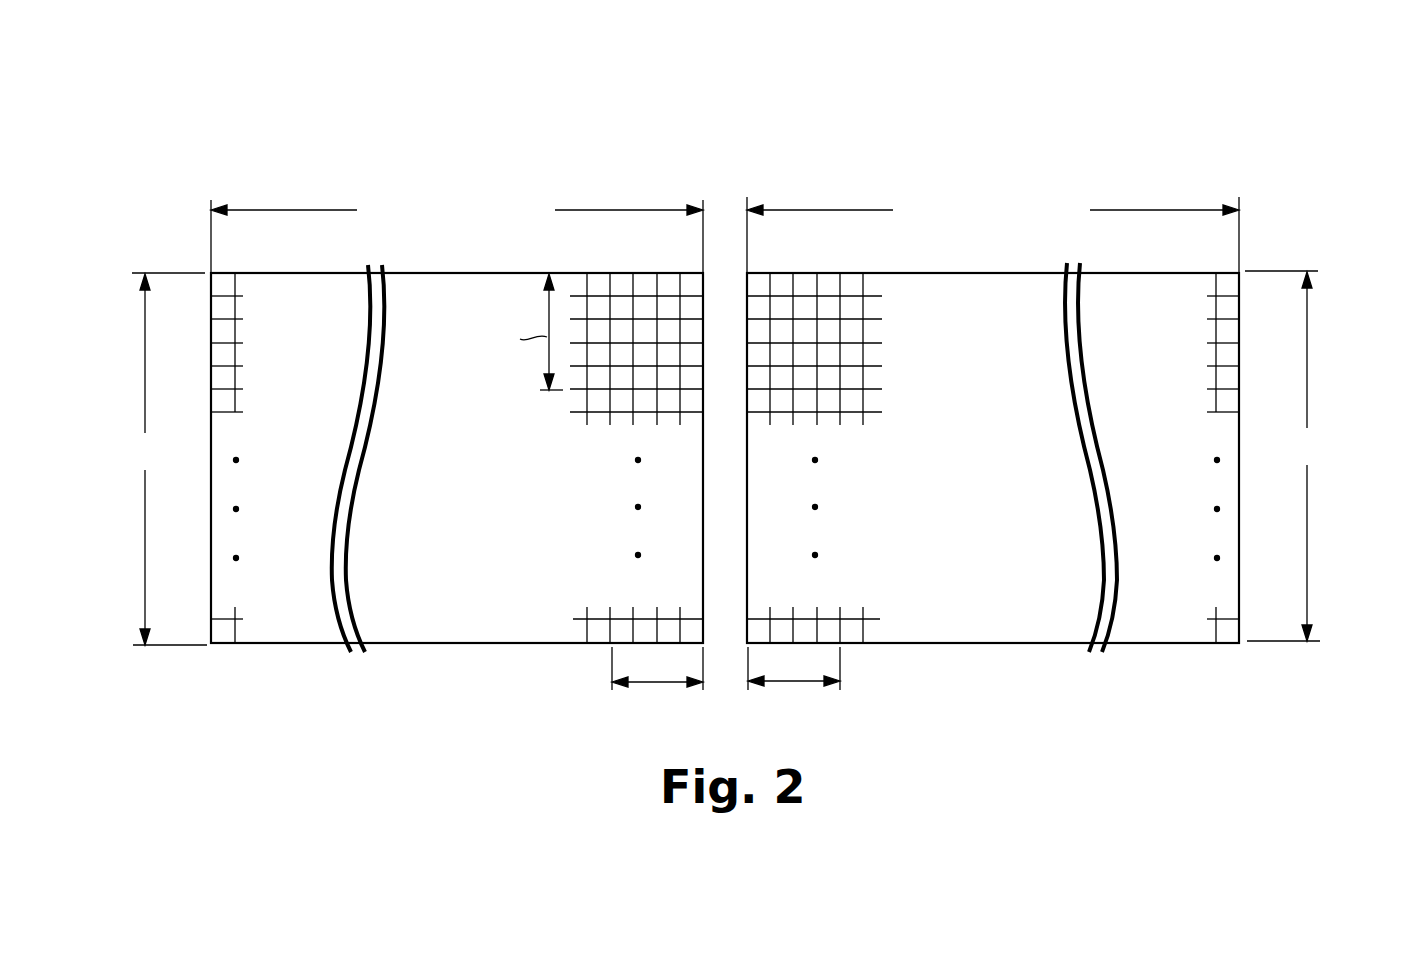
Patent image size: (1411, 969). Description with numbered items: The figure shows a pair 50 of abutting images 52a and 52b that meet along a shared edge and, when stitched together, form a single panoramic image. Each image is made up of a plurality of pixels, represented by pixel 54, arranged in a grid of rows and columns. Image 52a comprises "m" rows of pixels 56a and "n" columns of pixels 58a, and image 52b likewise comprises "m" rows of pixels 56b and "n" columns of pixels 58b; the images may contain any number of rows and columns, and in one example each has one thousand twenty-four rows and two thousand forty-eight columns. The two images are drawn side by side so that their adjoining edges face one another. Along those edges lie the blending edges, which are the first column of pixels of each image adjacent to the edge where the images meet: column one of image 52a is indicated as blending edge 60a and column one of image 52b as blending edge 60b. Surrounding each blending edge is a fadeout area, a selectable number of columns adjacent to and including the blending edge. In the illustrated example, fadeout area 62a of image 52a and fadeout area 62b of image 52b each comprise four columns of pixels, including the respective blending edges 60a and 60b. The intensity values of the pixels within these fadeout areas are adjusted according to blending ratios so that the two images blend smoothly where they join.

The pair of images 50 is at (1189, 110).
The image 52a is at (452, 646).
The image 52b is at (985, 646).
The pixel 54 is at (599, 412).
The rows of pixels 56a is at (123, 472).
The rows of pixels 56b is at (1327, 467).
The columns of pixels 58a is at (458, 196).
The columns of pixels 58b is at (966, 196).
The blending edge 60a is at (695, 645).
The blending edge 60b is at (758, 645).
The fadeout area 62a is at (659, 684).
The fadeout area 62b is at (794, 684).